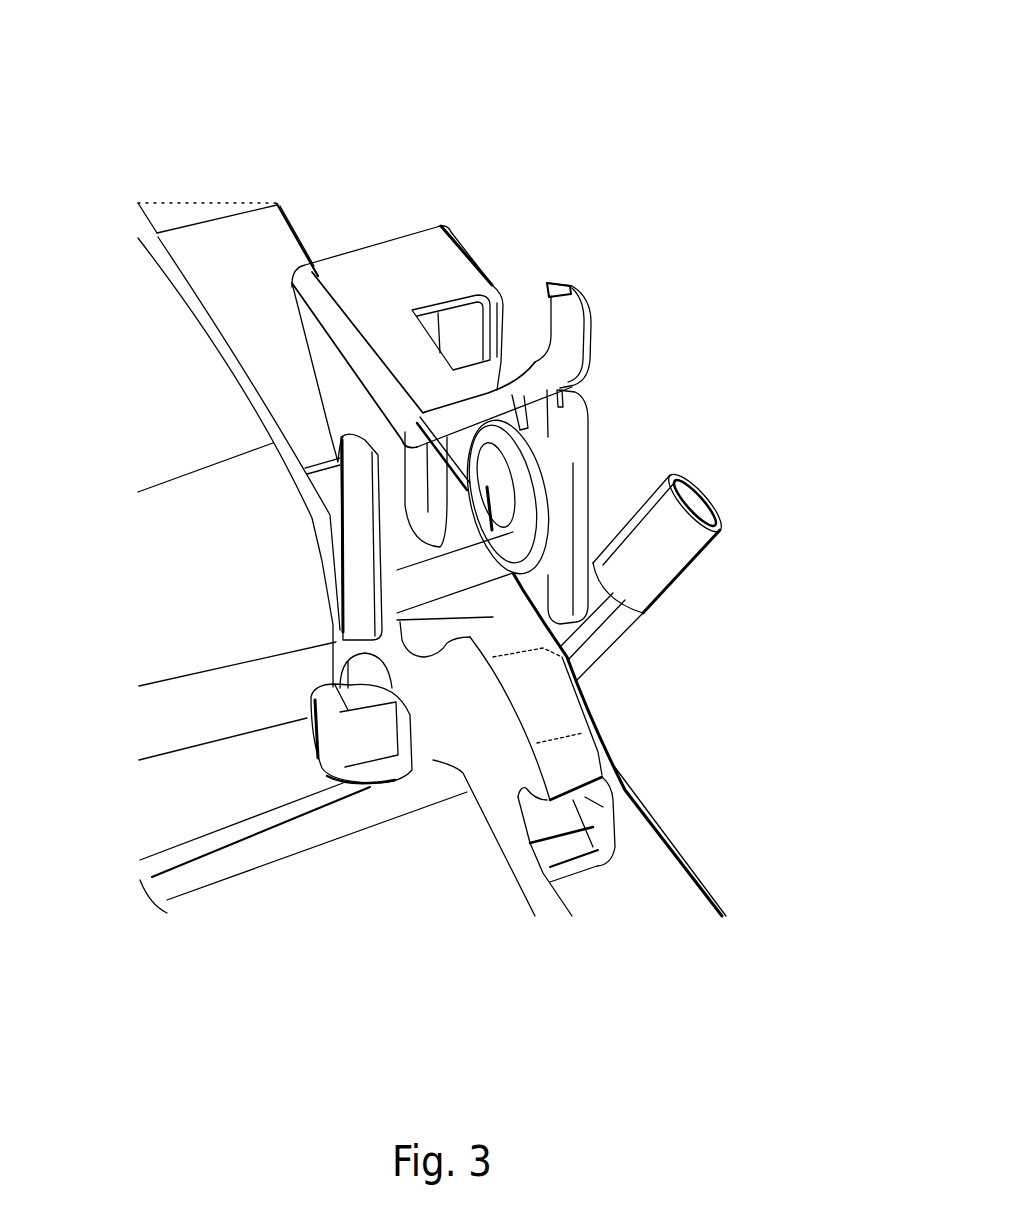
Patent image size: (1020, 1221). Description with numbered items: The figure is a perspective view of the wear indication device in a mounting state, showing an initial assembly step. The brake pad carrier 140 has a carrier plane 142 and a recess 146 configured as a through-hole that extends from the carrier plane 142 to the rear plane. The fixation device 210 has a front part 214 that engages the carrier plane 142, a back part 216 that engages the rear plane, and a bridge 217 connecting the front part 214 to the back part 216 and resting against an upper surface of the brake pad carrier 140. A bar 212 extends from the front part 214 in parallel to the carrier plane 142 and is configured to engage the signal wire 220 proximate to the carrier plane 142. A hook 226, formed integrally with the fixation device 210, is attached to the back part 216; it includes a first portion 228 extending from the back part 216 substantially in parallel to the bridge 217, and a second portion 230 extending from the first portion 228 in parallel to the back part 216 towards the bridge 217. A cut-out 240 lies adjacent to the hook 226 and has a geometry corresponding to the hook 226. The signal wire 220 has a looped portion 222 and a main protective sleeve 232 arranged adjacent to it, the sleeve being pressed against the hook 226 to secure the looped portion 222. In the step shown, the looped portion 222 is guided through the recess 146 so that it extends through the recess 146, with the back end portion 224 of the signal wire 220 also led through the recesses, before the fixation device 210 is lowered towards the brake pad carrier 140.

The brake pad carrier 140 is at (553, 718).
The carrier plane 142 is at (487, 763).
The recess 146 is at (352, 657).
The fixation device 210 is at (443, 163).
The bar 212 is at (357, 557).
The front part 214 is at (343, 383).
The back part 216 is at (542, 467).
The bridge 217 is at (373, 268).
The signal wire 220 is at (737, 514).
The looped portion 222 is at (325, 734).
The back end portion 224 is at (591, 677).
The hook 226 is at (600, 265).
The first portion 228 is at (590, 383).
The second portion 230 is at (598, 297).
The main protective sleeve 232 is at (662, 552).
The cut-out 240 is at (477, 323).